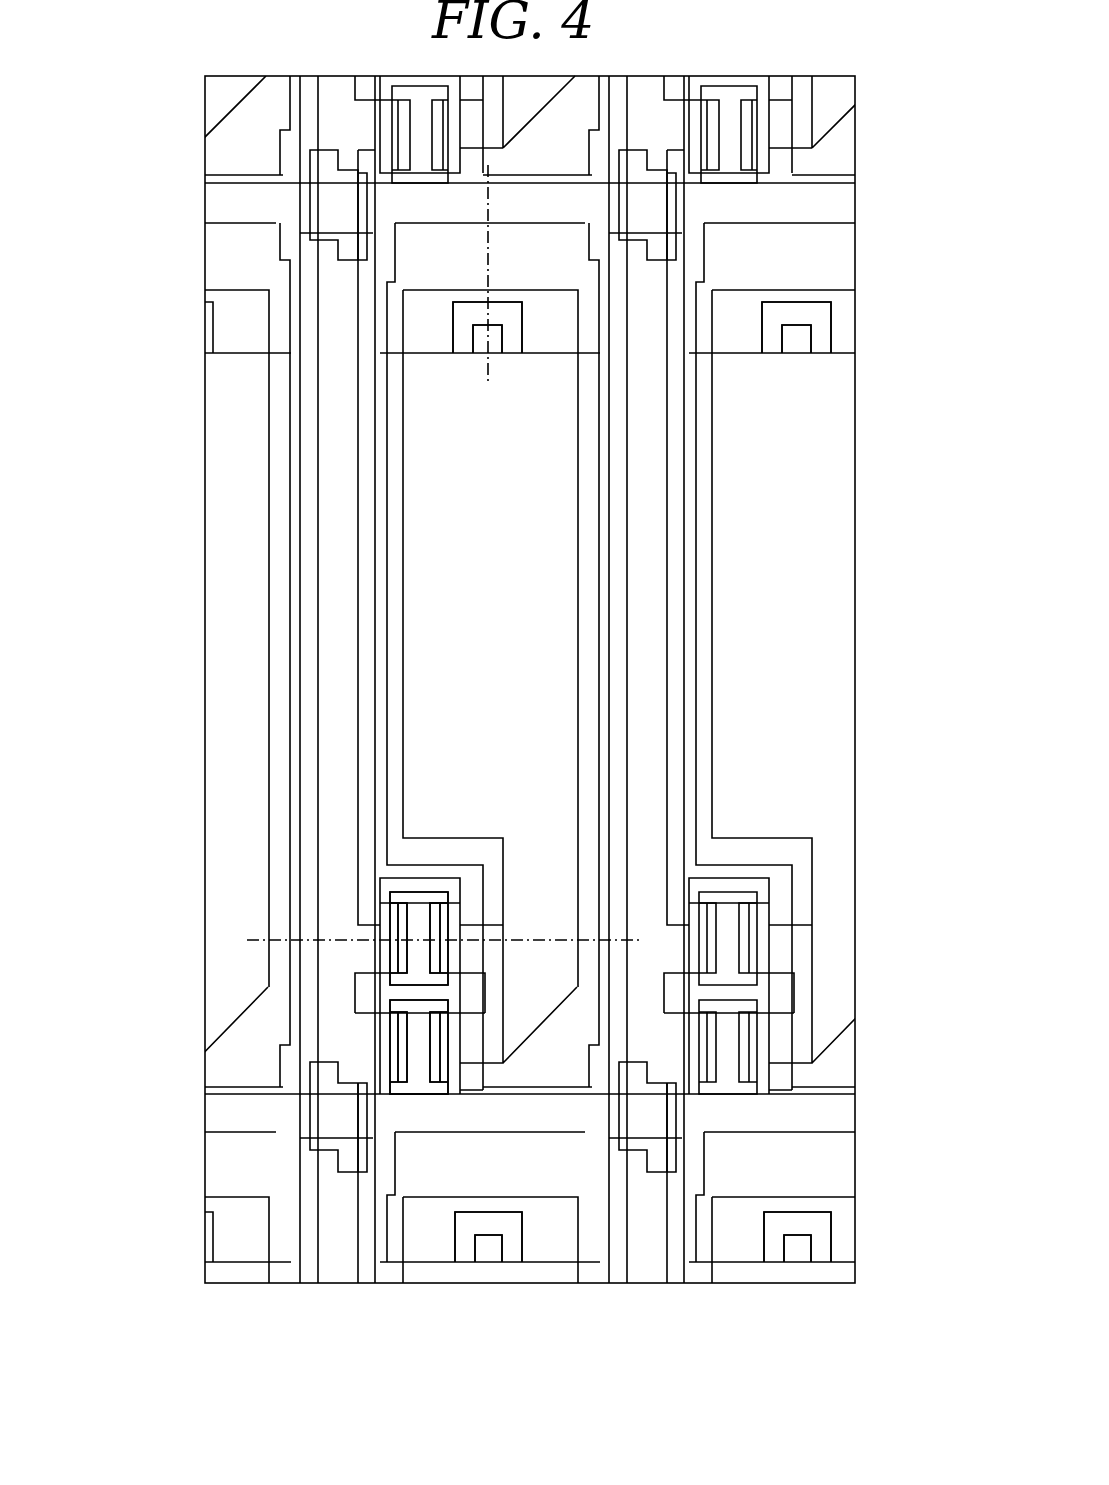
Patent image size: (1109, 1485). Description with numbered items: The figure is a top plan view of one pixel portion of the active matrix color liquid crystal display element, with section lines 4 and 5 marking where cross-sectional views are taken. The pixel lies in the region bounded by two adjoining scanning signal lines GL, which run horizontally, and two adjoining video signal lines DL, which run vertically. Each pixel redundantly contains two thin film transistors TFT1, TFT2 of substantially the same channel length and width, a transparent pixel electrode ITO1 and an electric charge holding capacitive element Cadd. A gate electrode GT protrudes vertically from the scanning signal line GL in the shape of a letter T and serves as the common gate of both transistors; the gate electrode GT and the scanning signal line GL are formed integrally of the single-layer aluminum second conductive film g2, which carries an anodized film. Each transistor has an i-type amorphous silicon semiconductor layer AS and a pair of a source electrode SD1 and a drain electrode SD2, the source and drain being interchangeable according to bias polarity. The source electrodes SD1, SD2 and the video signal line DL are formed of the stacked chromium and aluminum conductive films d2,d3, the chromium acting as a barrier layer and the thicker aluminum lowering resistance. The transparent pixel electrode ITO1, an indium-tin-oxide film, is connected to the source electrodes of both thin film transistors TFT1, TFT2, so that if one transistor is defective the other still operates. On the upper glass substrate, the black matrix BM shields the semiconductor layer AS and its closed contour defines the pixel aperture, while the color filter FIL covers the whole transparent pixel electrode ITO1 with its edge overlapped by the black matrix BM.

The scanning signal line GL is at (347, 232).
The second conductive film g2 is at (815, 330).
The video signal line DL is at (318, 675).
The gate electrode GT is at (427, 878).
The i-type semiconductor layer AS is at (330, 1062).
The source electrode SD1 is at (430, 1065).
The drain electrode SD2 is at (415, 1040).
The transparent pixel electrode ITO1 is at (388, 583).
The black matrix BM is at (575, 658).
The electric charge holding capacitive element Cadd is at (560, 272).
The thin film transistor TFT1 is at (480, 877).
The thin film transistor TFT2 is at (481, 1034).
The color filter FIL is at (620, 1283).
The second and third conductive films d2,d3 is at (456, 333).
The section line 4- 4 is at (478, 388).
The section line 5- 5 is at (646, 918).